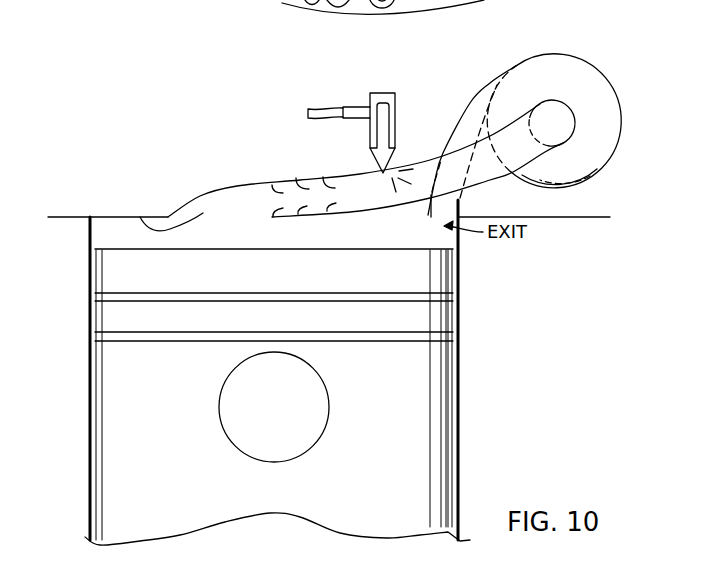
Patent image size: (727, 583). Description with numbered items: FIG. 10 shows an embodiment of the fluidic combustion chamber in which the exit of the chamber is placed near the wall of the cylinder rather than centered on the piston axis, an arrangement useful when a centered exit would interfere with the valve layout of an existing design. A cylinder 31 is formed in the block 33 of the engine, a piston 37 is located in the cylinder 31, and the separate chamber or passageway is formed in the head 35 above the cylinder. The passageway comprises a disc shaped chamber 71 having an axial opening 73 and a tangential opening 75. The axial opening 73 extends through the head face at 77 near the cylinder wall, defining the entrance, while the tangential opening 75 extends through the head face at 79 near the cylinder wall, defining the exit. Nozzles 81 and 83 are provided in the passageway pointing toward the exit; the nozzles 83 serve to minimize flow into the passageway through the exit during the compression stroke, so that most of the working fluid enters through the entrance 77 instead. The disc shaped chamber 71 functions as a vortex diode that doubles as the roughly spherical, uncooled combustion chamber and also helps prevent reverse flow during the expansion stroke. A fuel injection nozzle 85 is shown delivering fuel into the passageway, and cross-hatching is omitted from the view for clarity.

The cylinder 31 is at (90, 240).
The block 33 is at (528, 409).
The head 35 is at (137, 171).
The piston 37 is at (425, 452).
The disc shaped chamber 71 is at (578, 65).
The axial opening 73 is at (563, 131).
The tangential opening 75 is at (470, 105).
The entrance 77 is at (143, 218).
The exit 79 is at (435, 221).
The nozzles 81 is at (300, 186).
The nozzles 83 is at (455, 201).
The fuel injection nozzle 85 is at (405, 88).